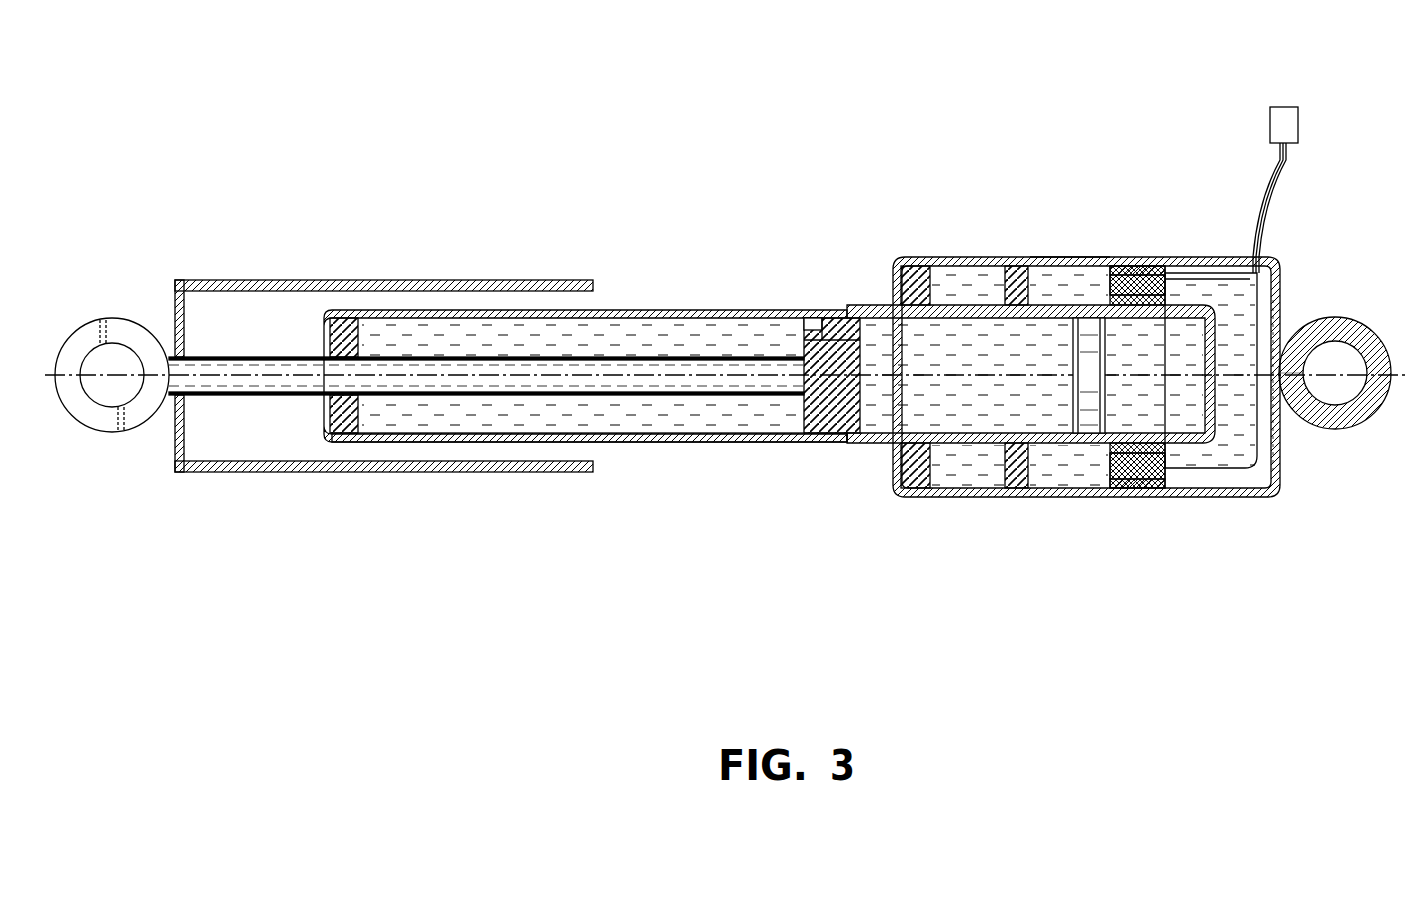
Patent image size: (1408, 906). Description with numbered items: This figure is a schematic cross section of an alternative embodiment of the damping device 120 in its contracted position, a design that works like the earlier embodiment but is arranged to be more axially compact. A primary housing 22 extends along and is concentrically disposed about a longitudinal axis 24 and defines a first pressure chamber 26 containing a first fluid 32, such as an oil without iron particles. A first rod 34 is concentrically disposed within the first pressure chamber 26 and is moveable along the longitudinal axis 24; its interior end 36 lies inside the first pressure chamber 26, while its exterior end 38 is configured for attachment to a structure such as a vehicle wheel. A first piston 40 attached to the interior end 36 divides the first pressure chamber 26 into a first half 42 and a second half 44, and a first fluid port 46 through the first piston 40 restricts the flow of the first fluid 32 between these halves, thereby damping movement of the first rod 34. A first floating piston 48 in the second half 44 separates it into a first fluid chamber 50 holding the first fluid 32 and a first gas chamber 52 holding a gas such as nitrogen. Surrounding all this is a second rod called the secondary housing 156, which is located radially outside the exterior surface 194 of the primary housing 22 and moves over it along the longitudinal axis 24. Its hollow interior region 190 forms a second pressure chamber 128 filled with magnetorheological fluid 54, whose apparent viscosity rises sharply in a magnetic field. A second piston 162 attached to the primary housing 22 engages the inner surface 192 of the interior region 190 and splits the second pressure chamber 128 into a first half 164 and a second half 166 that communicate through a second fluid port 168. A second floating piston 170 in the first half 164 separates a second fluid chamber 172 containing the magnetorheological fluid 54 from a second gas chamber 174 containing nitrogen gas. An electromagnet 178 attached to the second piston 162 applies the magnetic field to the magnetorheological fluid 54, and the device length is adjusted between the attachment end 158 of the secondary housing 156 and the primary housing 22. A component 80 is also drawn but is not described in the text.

The damping device 120 is at (795, 143).
The primary housing 22 is at (585, 390).
The longitudinal axis 24 is at (1341, 393).
The first pressure chamber 26 is at (700, 418).
The first fluid 32 is at (610, 338).
The first rod 34 is at (257, 385).
The interior end 36 is at (812, 382).
The exterior end 38 is at (97, 420).
The first piston 40 is at (850, 403).
The first half 42 is at (608, 418).
The second half 44 is at (893, 413).
The first fluid port 46 is at (835, 364).
The first floating piston 48 is at (1097, 398).
The first fluid chamber 50 is at (942, 407).
The first gas chamber 52 is at (1183, 422).
The magnetorheological fluid 54 is at (1093, 252).
The controller 80 is at (1290, 120).
The second pressure chamber 128 is at (1058, 280).
The secondary housing 156 is at (1093, 270).
The attachment end 158 is at (1335, 425).
The second piston 162 is at (1140, 327).
The first half 164 is at (1050, 478).
The second half 166 is at (1253, 490).
The second fluid port 168 is at (1163, 468).
The second floating piston 170 is at (1013, 280).
The second fluid chamber 172 is at (1042, 280).
The second gas chamber 174 is at (950, 280).
The electromagnet 178 is at (1165, 275).
The interior region 190 is at (1220, 460).
The inner surface 192 is at (1087, 478).
The exterior surface 194 is at (987, 447).